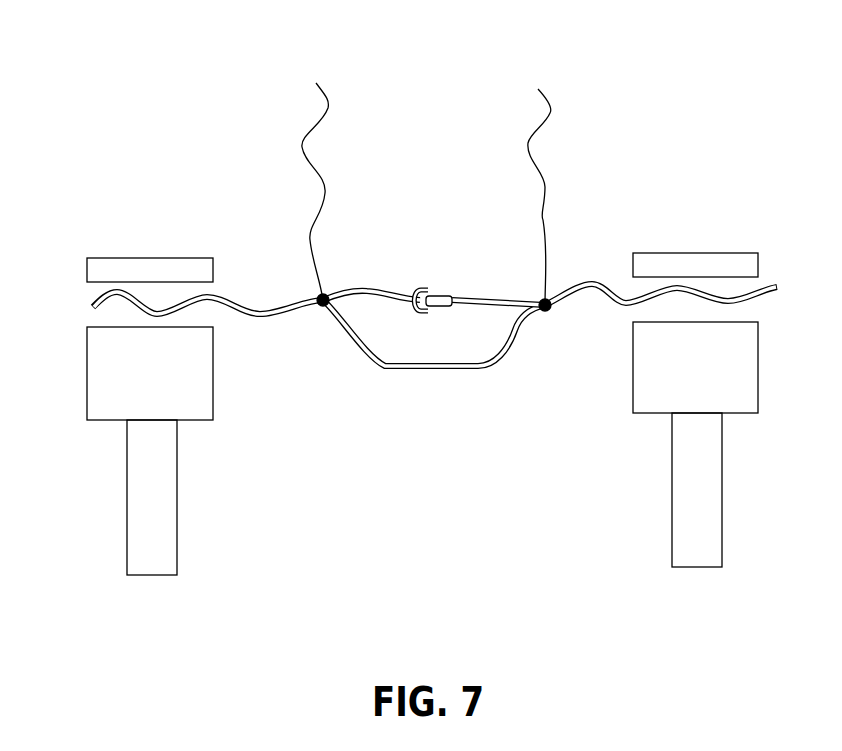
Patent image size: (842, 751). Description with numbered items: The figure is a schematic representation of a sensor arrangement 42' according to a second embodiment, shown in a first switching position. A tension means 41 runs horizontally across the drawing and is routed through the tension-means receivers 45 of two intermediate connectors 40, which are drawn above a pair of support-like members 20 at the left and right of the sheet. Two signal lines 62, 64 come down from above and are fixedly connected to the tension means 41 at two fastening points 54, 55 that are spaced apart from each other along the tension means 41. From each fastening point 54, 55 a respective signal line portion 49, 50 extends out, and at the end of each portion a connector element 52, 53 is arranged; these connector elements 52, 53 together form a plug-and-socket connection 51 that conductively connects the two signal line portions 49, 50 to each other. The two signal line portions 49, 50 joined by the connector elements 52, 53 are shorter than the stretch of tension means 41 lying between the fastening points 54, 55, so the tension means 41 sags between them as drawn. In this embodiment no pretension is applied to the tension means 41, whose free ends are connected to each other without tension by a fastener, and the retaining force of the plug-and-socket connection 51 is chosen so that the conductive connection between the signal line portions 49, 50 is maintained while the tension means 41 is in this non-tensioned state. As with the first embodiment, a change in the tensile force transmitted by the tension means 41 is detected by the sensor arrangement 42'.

The support post 20 is at (165, 455).
The intermediate connector 40 is at (162, 270).
The tension means 41 is at (93, 305).
The sensor arrangement 42' is at (661, 180).
The tension-means receiver 45 is at (148, 293).
The signal line portion 49 is at (373, 293).
The signal line portion 50 is at (490, 302).
The plug-and-socket connection 51 is at (439, 269).
The connector element 52 is at (415, 287).
The connector element 53 is at (442, 306).
The fastening point 54 is at (323, 300).
The fastening point 55 is at (545, 305).
The signal line 62 is at (298, 145).
The signal line 64 is at (527, 142).